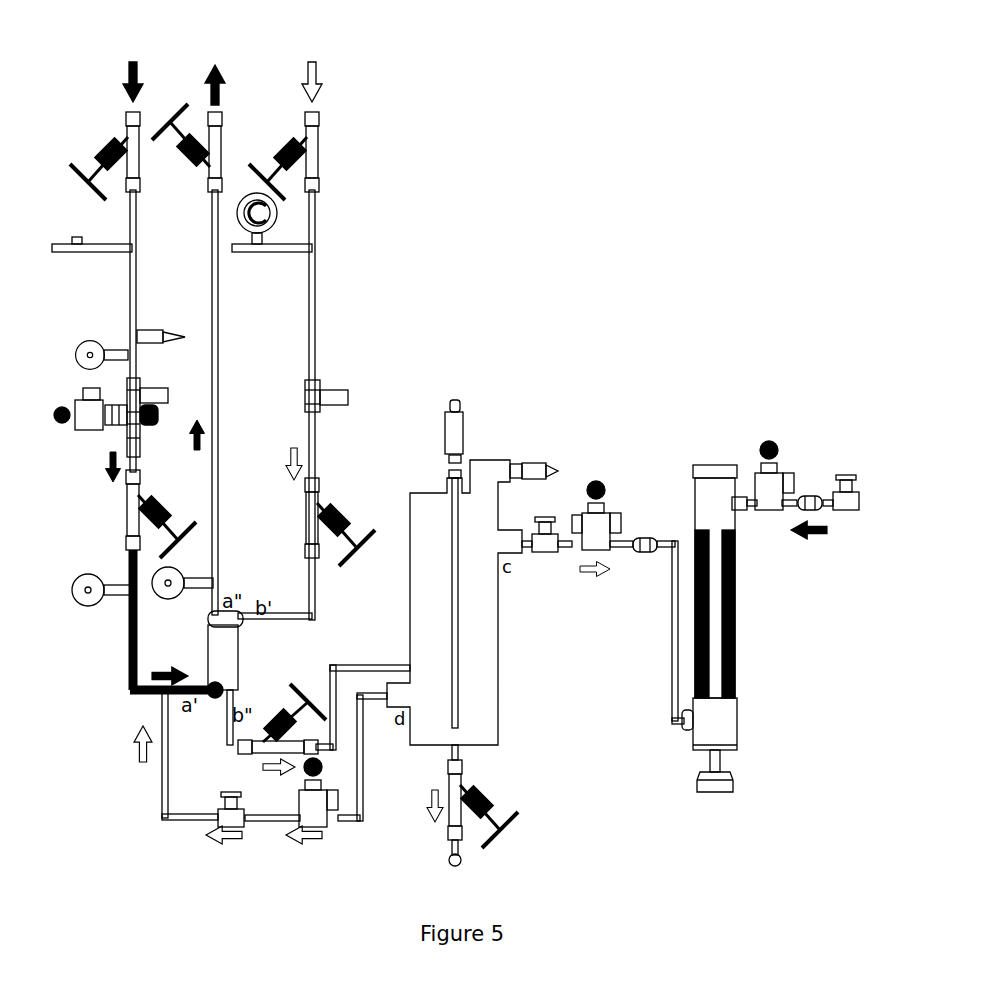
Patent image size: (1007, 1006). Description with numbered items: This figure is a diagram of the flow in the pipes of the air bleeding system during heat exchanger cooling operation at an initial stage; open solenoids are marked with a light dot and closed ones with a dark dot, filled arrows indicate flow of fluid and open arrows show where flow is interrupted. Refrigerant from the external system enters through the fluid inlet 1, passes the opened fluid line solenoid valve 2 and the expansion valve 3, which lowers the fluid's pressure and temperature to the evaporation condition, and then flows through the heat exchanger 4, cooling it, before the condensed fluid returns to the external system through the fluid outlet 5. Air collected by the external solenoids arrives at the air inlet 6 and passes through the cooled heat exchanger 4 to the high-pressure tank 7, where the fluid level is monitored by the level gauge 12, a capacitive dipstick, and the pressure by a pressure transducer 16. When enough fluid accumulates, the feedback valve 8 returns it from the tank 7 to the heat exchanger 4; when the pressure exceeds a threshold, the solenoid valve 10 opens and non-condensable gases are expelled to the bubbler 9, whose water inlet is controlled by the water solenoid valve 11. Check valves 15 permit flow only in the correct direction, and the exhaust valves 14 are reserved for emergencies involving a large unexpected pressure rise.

The fluid inlet 1 is at (128, 115).
The fluid line solenoid valve 2 is at (85, 398).
The expansion valve 3 is at (128, 545).
The heat exchanger 4 is at (240, 662).
The fluid outlet 5 is at (222, 115).
The air inlet 6 is at (320, 115).
The high-pressure tank 7 is at (485, 683).
The feedback valve 8 is at (328, 817).
The bubbler 9 is at (725, 725).
The solenoid valve 10 is at (603, 512).
The water solenoid valve 11 is at (783, 470).
The level gauge 12 is at (455, 518).
The exhaust valves 14 is at (120, 140).
The check valves 15 is at (165, 395).
The pressure transducer 16 is at (513, 463).